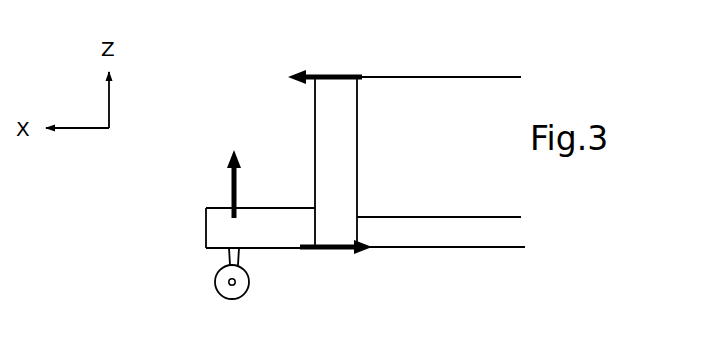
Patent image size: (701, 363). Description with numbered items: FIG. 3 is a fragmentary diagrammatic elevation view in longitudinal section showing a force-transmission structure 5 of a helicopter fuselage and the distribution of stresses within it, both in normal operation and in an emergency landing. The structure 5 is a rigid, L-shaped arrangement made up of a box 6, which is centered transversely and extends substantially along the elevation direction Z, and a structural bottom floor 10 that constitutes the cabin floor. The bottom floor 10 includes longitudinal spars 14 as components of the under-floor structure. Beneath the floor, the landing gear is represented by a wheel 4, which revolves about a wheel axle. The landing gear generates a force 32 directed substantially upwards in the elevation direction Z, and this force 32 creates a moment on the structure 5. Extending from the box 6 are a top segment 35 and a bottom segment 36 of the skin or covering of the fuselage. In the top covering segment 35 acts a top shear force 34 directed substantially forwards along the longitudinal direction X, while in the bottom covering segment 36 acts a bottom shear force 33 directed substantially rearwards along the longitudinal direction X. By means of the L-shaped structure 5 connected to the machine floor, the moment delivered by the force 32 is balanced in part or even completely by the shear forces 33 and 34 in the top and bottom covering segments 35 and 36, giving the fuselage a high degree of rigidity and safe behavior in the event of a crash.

The wheel 4 is at (216, 292).
The force-transmission structure 5 is at (268, 109).
The box 6 is at (349, 137).
The structural bottom floor 10 is at (185, 204).
The longitudinal spar 14 is at (233, 238).
The force 32 is at (226, 194).
The bottom shear force 33 is at (325, 253).
The top shear force 34 is at (343, 74).
The top segment of the skin or covering 35 is at (438, 75).
The bottom segment of the skin or covering 36 is at (475, 250).